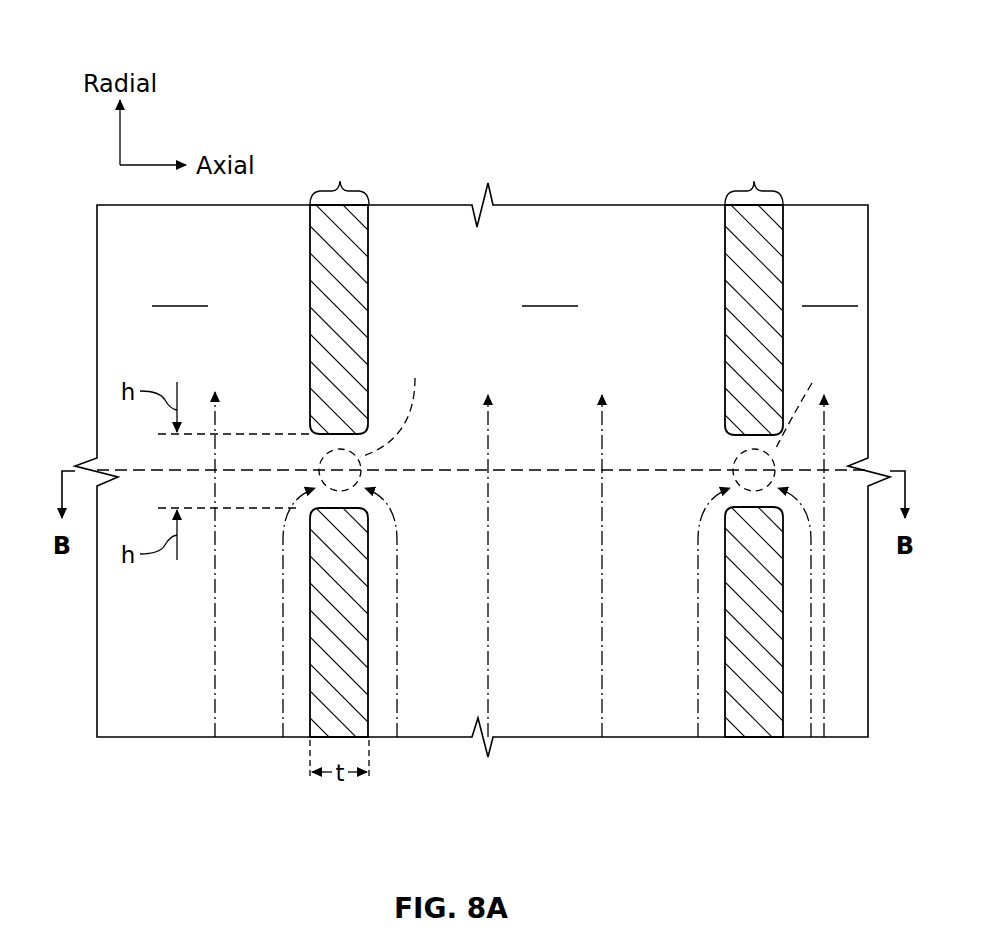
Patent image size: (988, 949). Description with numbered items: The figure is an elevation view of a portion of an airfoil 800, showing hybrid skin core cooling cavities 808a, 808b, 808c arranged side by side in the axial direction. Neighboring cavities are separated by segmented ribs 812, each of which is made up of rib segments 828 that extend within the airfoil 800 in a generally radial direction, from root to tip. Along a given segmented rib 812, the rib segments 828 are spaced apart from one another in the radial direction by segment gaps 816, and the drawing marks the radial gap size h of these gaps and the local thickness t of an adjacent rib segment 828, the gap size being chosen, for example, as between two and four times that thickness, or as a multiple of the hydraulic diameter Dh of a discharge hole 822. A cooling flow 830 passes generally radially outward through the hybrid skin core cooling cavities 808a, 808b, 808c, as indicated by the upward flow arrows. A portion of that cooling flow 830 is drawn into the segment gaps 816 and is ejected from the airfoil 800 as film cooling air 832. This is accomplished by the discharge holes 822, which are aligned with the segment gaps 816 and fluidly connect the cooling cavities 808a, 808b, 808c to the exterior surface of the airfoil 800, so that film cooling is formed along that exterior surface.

The airfoil 800 is at (108, 38).
The hybrid skin core cooling cavity 808a is at (179, 293).
The hybrid skin core cooling cavity 808b is at (550, 293).
The hybrid skin core cooling cavity 808c is at (829, 293).
The segmented rib 812 is at (546, 172).
The segment gap 816 is at (312, 466).
The discharge hole 822 is at (596, 402).
The rib segment 828 is at (318, 275).
The cooling flow 830 is at (212, 658).
The film cooling air 832 is at (305, 482).